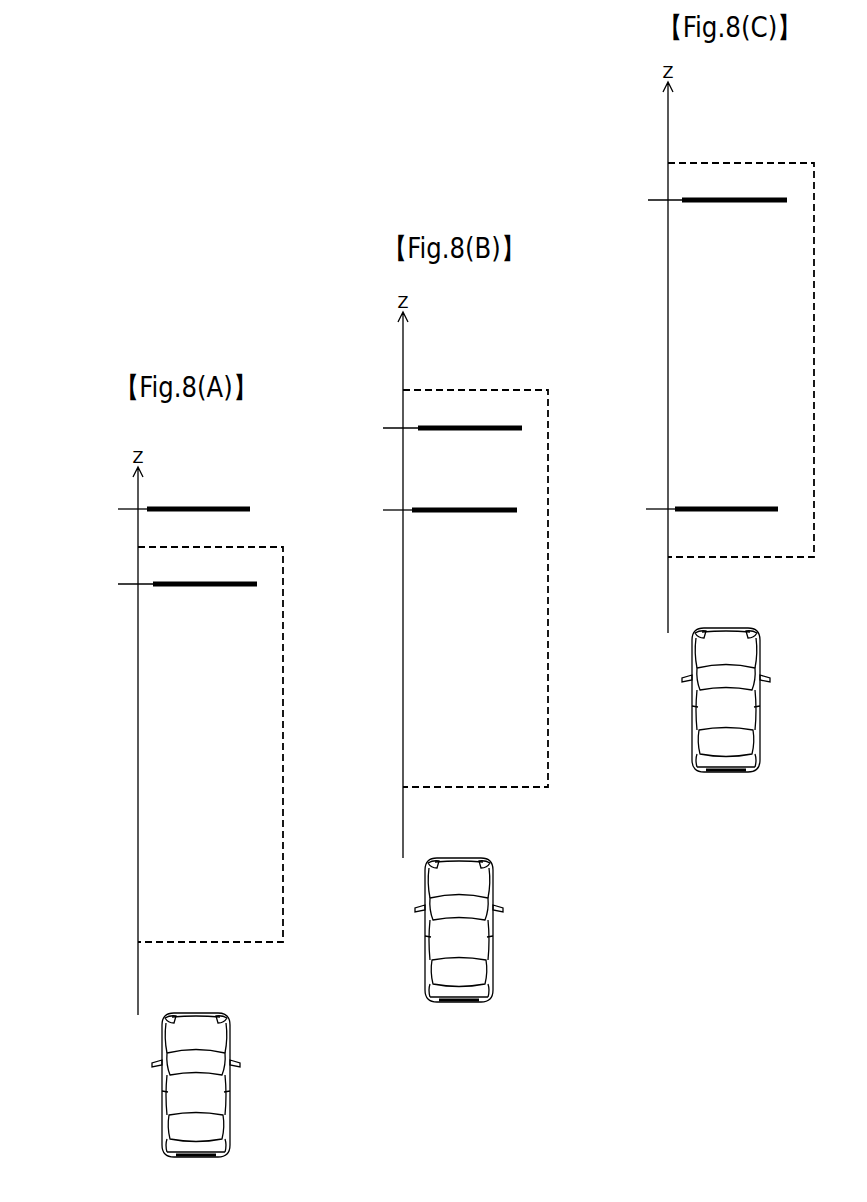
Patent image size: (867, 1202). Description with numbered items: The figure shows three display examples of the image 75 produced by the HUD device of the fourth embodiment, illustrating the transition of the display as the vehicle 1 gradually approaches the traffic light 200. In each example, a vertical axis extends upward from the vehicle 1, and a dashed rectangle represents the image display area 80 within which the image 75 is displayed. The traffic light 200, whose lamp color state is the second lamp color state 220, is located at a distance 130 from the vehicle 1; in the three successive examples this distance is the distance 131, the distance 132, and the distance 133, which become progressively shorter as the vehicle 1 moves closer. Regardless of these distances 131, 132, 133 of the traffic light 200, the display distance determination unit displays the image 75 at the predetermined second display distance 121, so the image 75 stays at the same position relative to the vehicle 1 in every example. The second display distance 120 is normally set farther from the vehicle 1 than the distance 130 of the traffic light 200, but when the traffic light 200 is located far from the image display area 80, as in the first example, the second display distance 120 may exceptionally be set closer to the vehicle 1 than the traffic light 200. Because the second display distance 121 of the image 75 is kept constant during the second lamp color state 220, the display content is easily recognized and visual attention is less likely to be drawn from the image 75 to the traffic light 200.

In FIG. 8A, the vehicle 1 is at (222, 1050).
In FIG. 8B, the vehicle 1 is at (488, 898).
In FIG. 8C, the vehicle 1 is at (753, 668).
In FIG. 8A, the image 75 is at (241, 583).
In FIG. 8B, the image 75 is at (504, 427).
In FIG. 8C, the image 75 is at (769, 199).
In FIG. 8A, the image display area 80 is at (283, 942).
In FIG. 8B, the image display area 80 is at (548, 787).
In FIG. 8C, the image display area 80 is at (814, 557).
In FIG. 8A, the second display distance 120 is at (86, 585).
In FIG. 8B, the second display distance 120 is at (351, 429).
In FIG. 8C, the second display distance 120 is at (616, 202).
In FIG. 8A, the second display distance 121 is at (86, 585).
In FIG. 8B, the second display distance 121 is at (351, 429).
In FIG. 8C, the second display distance 121 is at (616, 202).
In FIG. 8A, the distance of the traffic light 130 is at (91, 495).
In FIG. 8B, the distance of the traffic light 130 is at (356, 495).
In FIG. 8C, the distance of the traffic light 130 is at (617, 495).
In FIG. 8A, the distance of the traffic light 131 is at (91, 495).
In FIG. 8B, the distance of the traffic light 132 is at (356, 495).
In FIG. 8C, the distance of the traffic light 133 is at (617, 495).
In FIG. 8A, the traffic light 200 is at (162, 506).
In FIG. 8B, the traffic light 200 is at (427, 508).
In FIG. 8C, the traffic light 200 is at (690, 508).
In FIG. 8A, the second lamp color state 220 is at (211, 493).
In FIG. 8B, the second lamp color state 220 is at (476, 492).
In FIG. 8C, the second lamp color state 220 is at (739, 491).